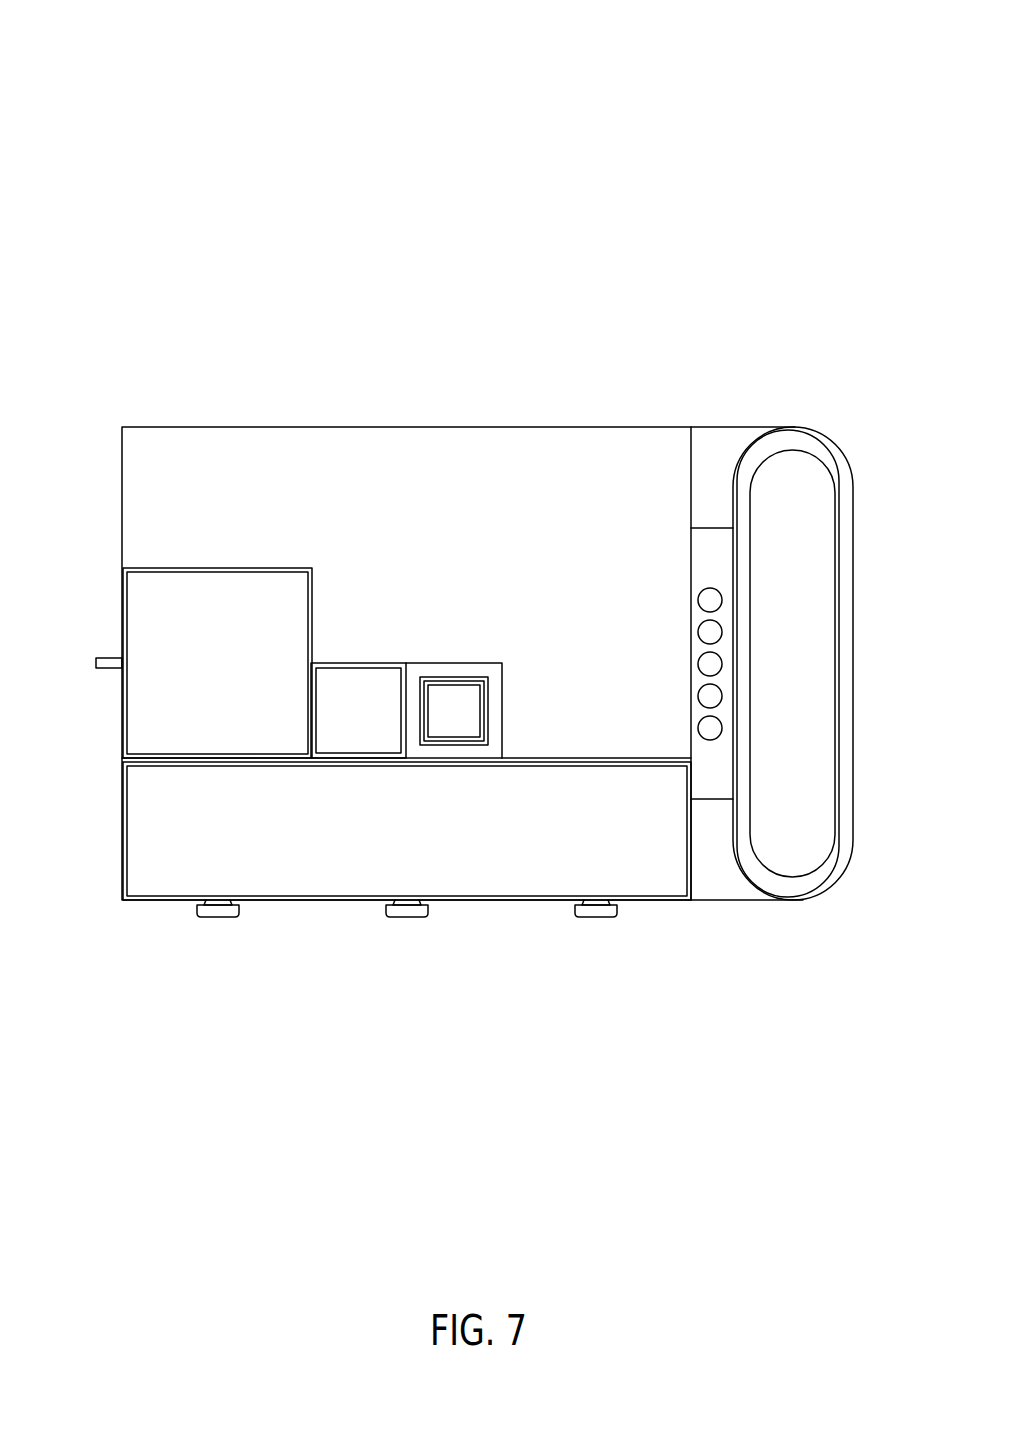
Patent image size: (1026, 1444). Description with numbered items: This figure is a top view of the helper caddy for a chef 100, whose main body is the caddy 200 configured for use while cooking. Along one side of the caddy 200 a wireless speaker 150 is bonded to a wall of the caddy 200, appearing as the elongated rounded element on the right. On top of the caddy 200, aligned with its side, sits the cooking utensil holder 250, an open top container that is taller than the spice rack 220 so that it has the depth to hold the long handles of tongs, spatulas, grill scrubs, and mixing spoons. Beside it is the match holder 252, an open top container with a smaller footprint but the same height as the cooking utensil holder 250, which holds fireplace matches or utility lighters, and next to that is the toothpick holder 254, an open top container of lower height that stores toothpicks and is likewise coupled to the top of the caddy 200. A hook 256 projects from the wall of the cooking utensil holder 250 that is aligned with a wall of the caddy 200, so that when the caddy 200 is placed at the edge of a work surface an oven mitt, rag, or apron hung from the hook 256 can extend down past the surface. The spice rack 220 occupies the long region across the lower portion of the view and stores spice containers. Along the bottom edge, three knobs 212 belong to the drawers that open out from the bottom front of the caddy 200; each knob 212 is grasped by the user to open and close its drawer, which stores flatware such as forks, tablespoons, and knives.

The helper caddy for a chef 100 is at (100, 178).
The wireless speaker 150 is at (808, 634).
The caddy 200 is at (657, 449).
The knob 212 is at (583, 913).
The spice rack 220 is at (116, 752).
The cooking utensil holder 250 is at (158, 567).
The match holder 252 is at (356, 663).
The toothpick holder 254 is at (494, 708).
The hook 256 is at (104, 662).